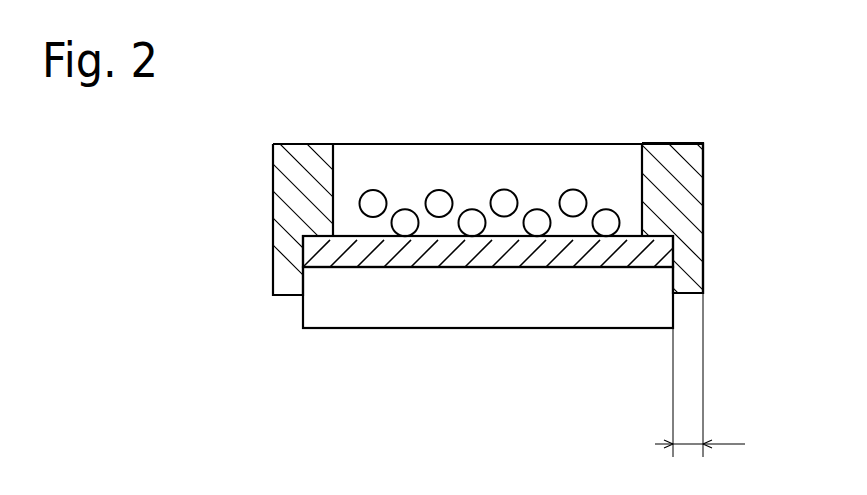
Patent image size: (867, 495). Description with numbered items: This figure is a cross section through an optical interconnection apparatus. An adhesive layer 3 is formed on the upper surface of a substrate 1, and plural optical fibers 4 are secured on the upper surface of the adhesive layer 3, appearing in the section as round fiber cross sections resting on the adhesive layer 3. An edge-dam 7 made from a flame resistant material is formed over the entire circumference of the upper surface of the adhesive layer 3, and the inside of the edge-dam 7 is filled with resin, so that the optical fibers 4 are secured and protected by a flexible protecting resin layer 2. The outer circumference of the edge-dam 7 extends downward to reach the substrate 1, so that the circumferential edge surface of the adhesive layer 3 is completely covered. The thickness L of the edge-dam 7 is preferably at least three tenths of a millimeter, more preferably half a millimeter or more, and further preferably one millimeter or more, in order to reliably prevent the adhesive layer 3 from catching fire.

The substrate 1 is at (512, 313).
The flexible protecting resin layer 2 is at (616, 158).
The adhesive layer 3 is at (412, 252).
The optical fibers 4 is at (606, 224).
The edge-dam 7 is at (672, 189).
The thickness of the edge-dam L is at (700, 375).